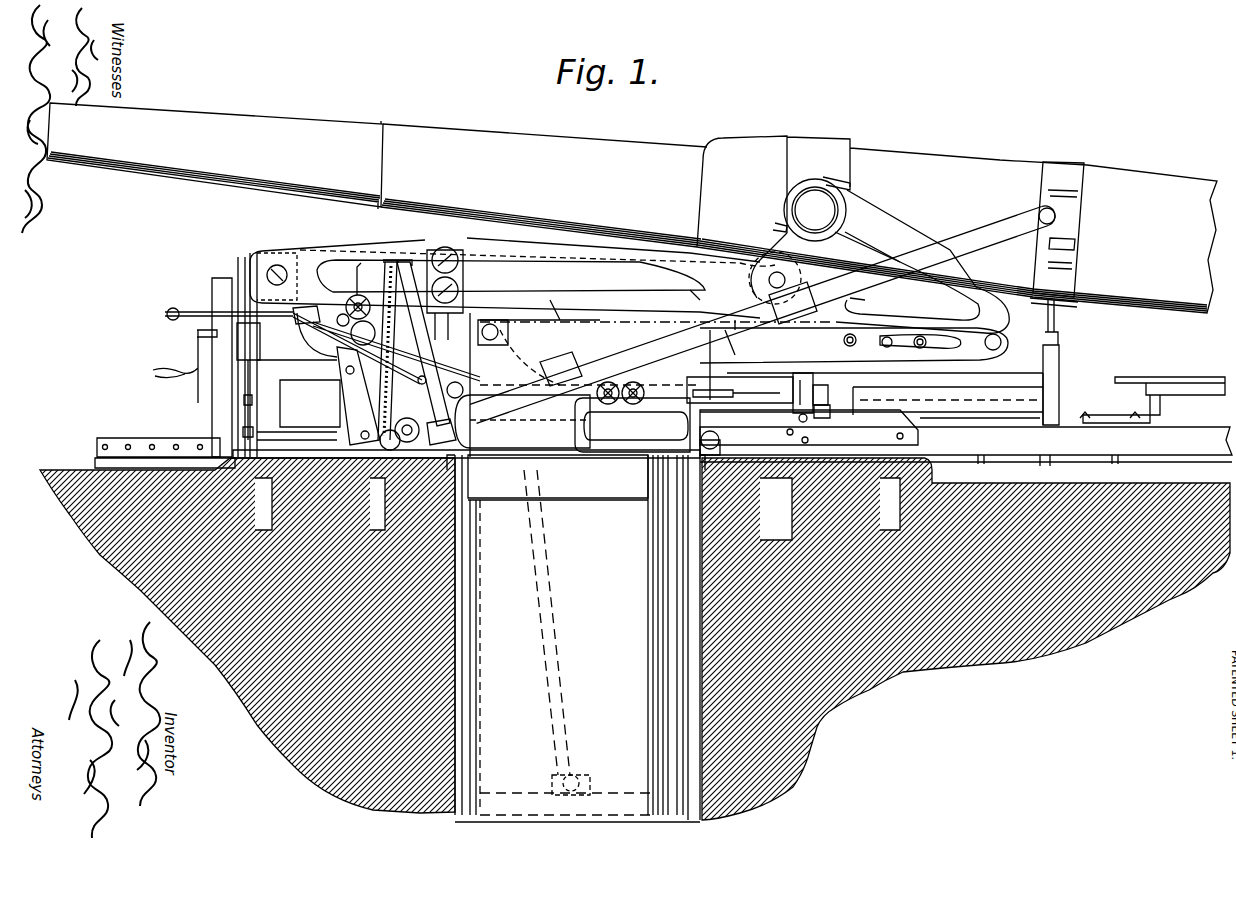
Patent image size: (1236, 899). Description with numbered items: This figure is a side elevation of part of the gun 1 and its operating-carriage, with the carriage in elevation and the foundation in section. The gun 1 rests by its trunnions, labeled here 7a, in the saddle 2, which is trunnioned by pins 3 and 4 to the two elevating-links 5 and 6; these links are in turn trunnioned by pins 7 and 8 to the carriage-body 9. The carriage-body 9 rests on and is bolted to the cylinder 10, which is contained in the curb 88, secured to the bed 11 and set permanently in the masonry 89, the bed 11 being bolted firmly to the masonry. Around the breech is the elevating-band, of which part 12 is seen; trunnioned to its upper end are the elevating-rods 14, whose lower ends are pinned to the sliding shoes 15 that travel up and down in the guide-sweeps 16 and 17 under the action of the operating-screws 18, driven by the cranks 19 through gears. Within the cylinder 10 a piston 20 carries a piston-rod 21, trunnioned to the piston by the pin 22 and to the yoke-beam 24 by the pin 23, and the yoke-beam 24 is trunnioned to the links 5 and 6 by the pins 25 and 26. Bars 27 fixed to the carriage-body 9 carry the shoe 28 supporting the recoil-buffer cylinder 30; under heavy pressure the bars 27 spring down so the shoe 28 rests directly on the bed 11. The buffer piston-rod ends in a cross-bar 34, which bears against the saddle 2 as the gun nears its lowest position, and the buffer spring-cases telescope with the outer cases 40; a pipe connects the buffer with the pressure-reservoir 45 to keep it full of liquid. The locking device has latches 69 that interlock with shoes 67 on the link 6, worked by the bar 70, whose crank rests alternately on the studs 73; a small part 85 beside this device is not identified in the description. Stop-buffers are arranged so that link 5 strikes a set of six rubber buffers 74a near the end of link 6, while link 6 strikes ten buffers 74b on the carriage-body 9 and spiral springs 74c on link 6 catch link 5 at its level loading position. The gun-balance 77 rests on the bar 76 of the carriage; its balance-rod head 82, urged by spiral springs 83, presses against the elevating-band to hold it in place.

The gun 1 is at (632, 208).
The saddle 2 is at (629, 261).
The pin 3 is at (775, 278).
The pin 4 is at (995, 352).
The elevating-link 5 is at (600, 330).
The elevating-link 6 is at (854, 364).
The pin 7 is at (277, 276).
The trunnion ring 7a is at (811, 209).
The pin 8 is at (492, 325).
The carriage-body 9 is at (478, 385).
The cylinder 10 is at (576, 637).
The bed 11 is at (287, 447).
The elevating-band part 12 is at (1058, 229).
The elevating-rods 14 is at (990, 240).
The sliding shoes 15 is at (376, 400).
The guide-sweep 16 is at (325, 424).
The guide-sweep 17 is at (345, 390).
The operating-screws 18 is at (358, 376).
The cranks 19 is at (404, 293).
The piston 20 is at (577, 807).
The piston-rod 21 is at (563, 622).
The pin 22 is at (585, 780).
The pin 23 is at (522, 421).
The yoke-beam 24 is at (655, 302).
The pin 25 is at (530, 357).
The pin 26 is at (690, 432).
The bars 27 is at (880, 440).
The shoe 28 is at (870, 412).
The recoil-buffer cylinder 30 is at (871, 399).
The cross-bar 34 is at (864, 301).
The outer cases 40 is at (885, 373).
The reservoir 45 is at (980, 401).
The shoes 67 is at (800, 380).
The latches 69 is at (807, 423).
The bar 70 is at (762, 392).
The studs 73 is at (1054, 287).
The rubber stop-buffers 74a is at (540, 299).
The rubber stop-buffers 74b is at (740, 338).
The spiral spring stop-buffers 74c is at (697, 285).
The bar of the carriage 76 is at (1066, 458).
The gun-balance 77 is at (1059, 352).
The head of balance-rod 82 is at (1068, 316).
The spiral springs 83 is at (795, 400).
The pin 85 is at (800, 440).
The curb 88 is at (660, 590).
The masonry 89 is at (635, 639).